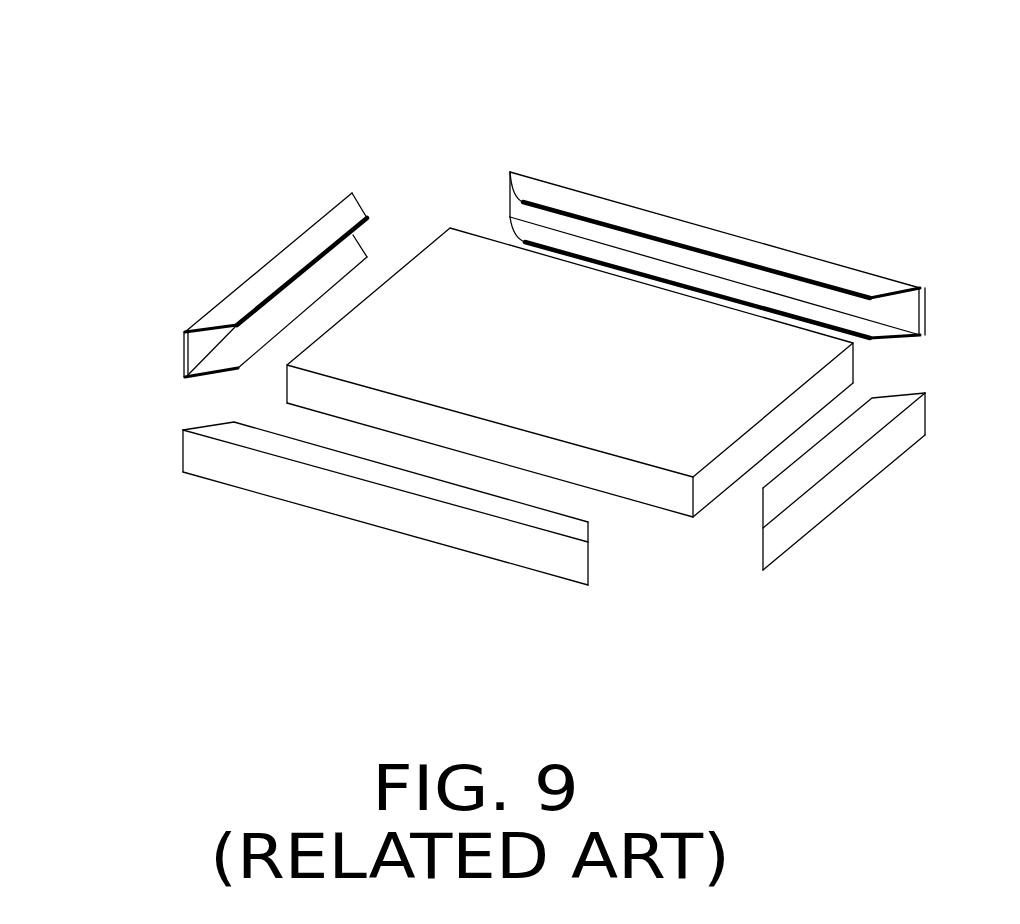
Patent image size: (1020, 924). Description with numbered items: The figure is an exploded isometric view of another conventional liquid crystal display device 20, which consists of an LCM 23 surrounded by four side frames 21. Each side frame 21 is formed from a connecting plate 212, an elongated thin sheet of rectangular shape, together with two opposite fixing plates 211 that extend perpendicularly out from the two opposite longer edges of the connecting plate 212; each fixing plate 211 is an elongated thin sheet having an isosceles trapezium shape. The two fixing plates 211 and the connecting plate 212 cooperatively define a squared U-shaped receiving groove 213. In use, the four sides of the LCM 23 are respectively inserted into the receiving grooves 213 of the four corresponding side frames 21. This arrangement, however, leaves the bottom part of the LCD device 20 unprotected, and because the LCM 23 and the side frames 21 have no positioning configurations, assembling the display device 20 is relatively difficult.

The LCD device 20 is at (554, 301).
The side frame 21 is at (82, 260).
The fixing plate 211 is at (230, 308).
The connecting plate 212 is at (183, 352).
The receiving groove 213 is at (227, 349).
The LCM 23 is at (467, 265).